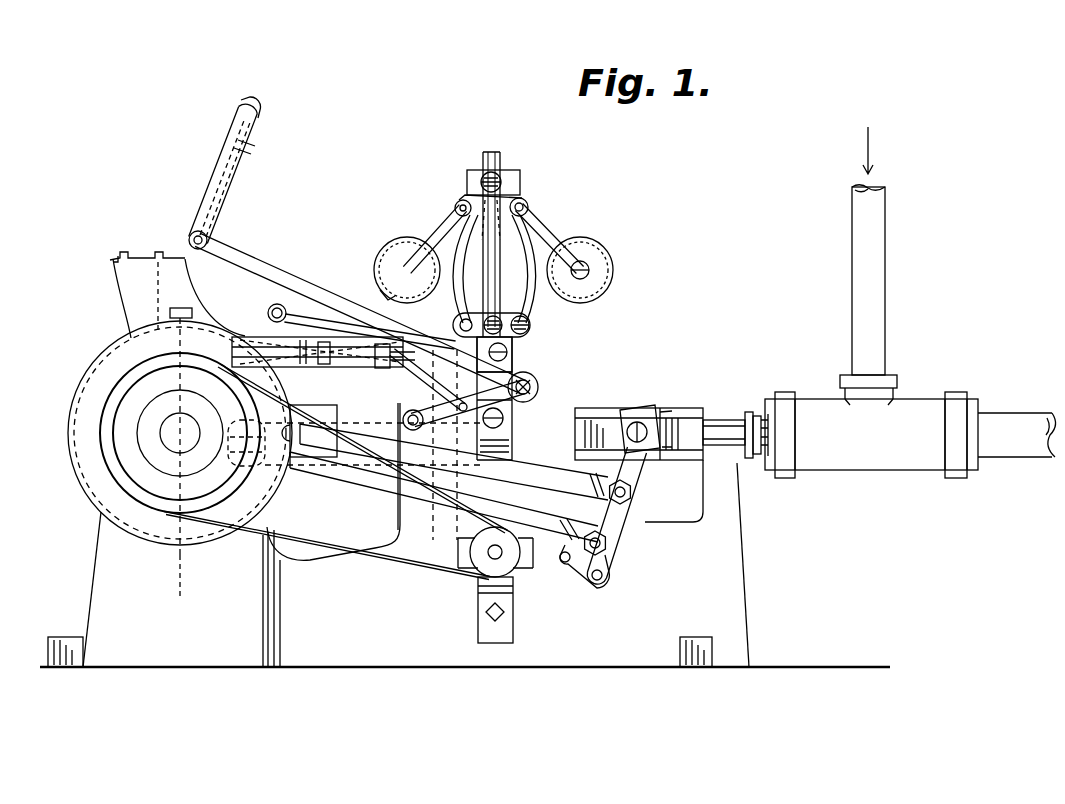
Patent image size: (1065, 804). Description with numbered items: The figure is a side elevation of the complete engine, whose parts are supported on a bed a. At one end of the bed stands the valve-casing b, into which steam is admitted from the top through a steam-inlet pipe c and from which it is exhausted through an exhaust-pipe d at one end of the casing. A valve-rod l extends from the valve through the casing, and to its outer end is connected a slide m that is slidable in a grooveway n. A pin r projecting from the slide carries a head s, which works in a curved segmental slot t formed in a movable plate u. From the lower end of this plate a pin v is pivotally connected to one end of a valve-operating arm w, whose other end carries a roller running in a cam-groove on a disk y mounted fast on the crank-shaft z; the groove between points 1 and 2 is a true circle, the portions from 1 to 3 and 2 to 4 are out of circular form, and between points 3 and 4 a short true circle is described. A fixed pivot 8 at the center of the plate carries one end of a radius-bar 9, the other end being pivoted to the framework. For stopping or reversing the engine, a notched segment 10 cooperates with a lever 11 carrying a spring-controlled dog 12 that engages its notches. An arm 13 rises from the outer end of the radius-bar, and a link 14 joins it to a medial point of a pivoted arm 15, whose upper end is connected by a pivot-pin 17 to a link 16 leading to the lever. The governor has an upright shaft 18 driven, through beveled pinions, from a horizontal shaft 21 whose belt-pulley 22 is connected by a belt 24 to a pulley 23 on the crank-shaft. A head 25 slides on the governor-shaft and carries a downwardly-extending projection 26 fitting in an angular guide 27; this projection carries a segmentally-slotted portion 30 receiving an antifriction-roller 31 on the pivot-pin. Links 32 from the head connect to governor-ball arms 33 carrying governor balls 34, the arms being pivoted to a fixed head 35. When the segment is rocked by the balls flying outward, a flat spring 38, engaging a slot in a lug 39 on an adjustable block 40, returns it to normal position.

The cam-groove point 1 is at (177, 295).
The cam-groove point 2 is at (241, 535).
The cam-groove point 3 is at (240, 396).
The cam-groove point 4 is at (240, 478).
The fixed pivot 8 is at (632, 494).
The radius-bar 9 is at (537, 464).
The notched segment 10 is at (112, 262).
The lever 11 is at (208, 192).
The spring-controlled dog 12 is at (203, 282).
The arm 13 is at (268, 322).
The link 14 is at (396, 372).
The pivoted arm 15 is at (425, 408).
The link 16 is at (321, 292).
The pivot-pin 17 is at (538, 382).
The upright shaft 18 is at (493, 150).
The horizontal shaft 21 is at (495, 552).
The belt-pulley 22 is at (480, 560).
The pulley 23 is at (118, 480).
The belt 24 is at (395, 562).
The head 25 is at (522, 324).
The downwardly-extending projection 26 is at (505, 418).
The angular guide 27 is at (476, 430).
The segmentally-slotted portion 30 is at (512, 364).
The antifriction-roller 31 is at (536, 374).
The links 32 is at (458, 300).
The governor-ball arms 33 is at (447, 220).
The governor balls 34 is at (399, 244).
The fixed head 35 is at (520, 182).
The flat spring 38 is at (322, 366).
The lug 39 is at (368, 366).
The adjustable block 40 is at (396, 362).
The bed a is at (747, 584).
The valve-casing b is at (908, 467).
The steam-inlet pipe c is at (886, 308).
The exhaust-pipe d is at (1013, 455).
The valve-rod l is at (721, 428).
The slide m is at (691, 424).
The grooveway n is at (582, 428).
The pin r is at (660, 410).
The head s is at (640, 420).
The curved segmental slot t is at (633, 468).
The movable plate u is at (612, 545).
The pin v is at (607, 562).
The valve-operating arm w is at (543, 540).
The disk y is at (105, 352).
The crank-shaft z is at (180, 433).